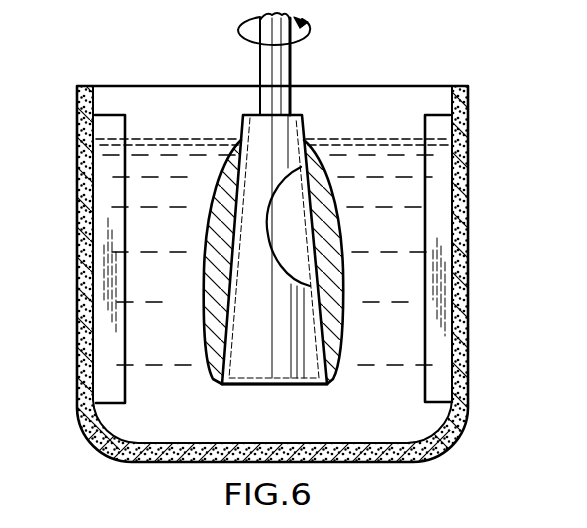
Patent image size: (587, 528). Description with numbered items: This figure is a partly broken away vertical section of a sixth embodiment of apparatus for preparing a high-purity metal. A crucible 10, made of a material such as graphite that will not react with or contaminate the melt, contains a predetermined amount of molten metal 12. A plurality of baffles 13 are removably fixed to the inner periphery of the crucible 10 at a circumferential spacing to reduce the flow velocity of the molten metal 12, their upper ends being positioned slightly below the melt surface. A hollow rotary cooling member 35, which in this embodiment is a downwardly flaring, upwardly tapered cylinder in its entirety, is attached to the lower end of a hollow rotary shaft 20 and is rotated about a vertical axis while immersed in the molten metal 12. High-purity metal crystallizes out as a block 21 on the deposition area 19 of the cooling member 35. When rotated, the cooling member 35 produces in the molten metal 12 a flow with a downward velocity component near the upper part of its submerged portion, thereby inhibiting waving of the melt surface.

The crucible 10 is at (468, 287).
The molten metal 12 is at (407, 418).
The baffles 13 is at (109, 379).
The deposition area 19 is at (212, 292).
The hollow rotary shaft 20 is at (281, 68).
The block 21 is at (333, 326).
The hollow rotary cooling member 35 is at (285, 386).